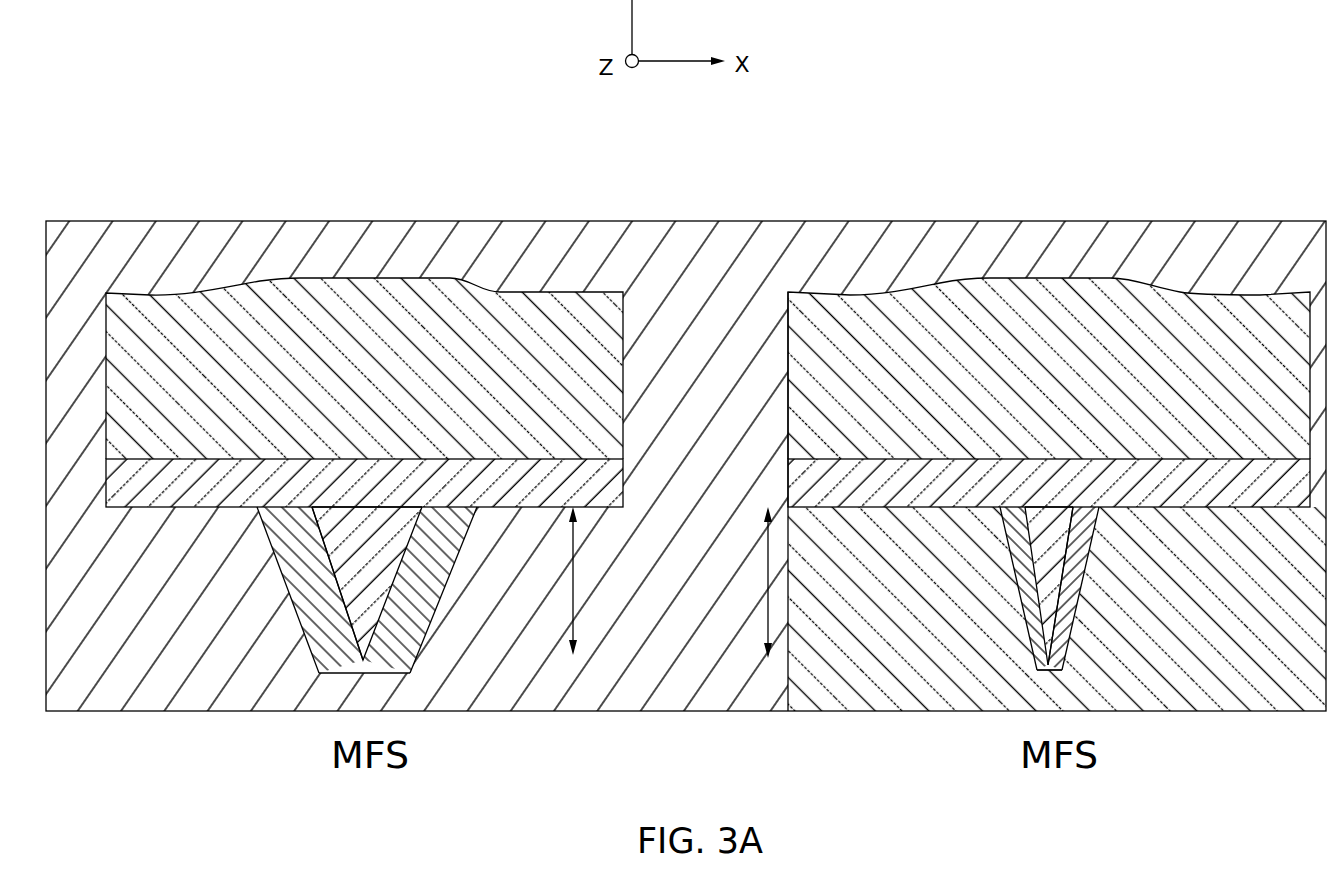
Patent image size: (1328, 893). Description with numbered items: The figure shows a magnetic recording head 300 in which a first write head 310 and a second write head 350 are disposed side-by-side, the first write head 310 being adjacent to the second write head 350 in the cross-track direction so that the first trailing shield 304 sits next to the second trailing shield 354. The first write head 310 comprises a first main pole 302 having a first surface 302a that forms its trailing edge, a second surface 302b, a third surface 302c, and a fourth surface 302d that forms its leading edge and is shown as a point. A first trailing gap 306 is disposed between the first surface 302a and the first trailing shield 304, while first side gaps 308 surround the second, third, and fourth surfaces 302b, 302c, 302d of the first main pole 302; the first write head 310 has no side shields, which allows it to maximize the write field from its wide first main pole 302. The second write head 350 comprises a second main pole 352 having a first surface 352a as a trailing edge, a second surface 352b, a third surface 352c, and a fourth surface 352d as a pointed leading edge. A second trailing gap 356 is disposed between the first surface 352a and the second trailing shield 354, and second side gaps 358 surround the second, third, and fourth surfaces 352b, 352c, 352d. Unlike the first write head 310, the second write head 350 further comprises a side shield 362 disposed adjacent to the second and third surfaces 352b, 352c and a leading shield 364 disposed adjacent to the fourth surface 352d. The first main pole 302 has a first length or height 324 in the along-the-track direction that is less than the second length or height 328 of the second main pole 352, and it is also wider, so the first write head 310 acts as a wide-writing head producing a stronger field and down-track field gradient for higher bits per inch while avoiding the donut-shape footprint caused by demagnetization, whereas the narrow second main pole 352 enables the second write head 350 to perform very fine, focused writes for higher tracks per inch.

The magnetic recording head 300 is at (255, 64).
The first write head 310 is at (124, 155).
The second write head 350 is at (856, 155).
The first trailing shield 304 is at (347, 372).
The first trailing gap 306 is at (231, 495).
The first main pole 302 is at (380, 554).
The first surface 302a is at (373, 515).
The second surface 302b is at (347, 608).
The third surface 302c is at (398, 580).
The fourth surface 302d is at (380, 660).
The first side gaps 308 is at (303, 557).
The first length or height 324 is at (573, 577).
The second trailing shield 354 is at (1040, 372).
The second trailing gap 356 is at (905, 493).
The second main pole 352 is at (1033, 533).
The first surface 352a is at (1055, 515).
The second surface 352b is at (1027, 567).
The third surface 352c is at (1073, 547).
The fourth surface 352d is at (1037, 668).
The second side gaps 358 is at (1063, 607).
The side shield 362 is at (825, 619).
The leading shield 364 is at (1072, 702).
The second length or height 328 is at (767, 557).